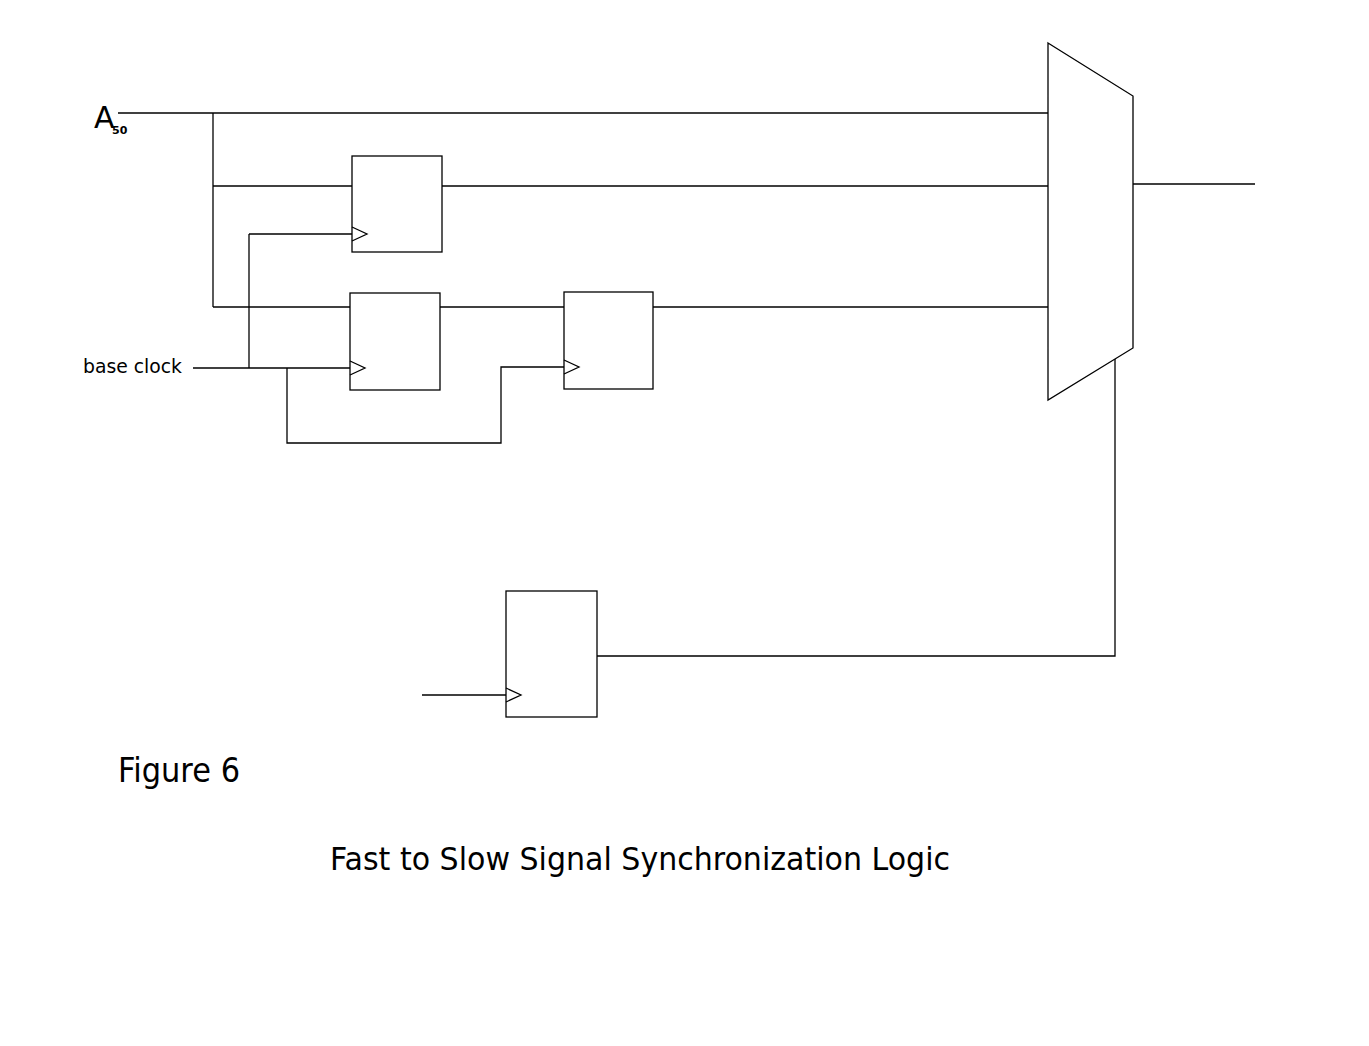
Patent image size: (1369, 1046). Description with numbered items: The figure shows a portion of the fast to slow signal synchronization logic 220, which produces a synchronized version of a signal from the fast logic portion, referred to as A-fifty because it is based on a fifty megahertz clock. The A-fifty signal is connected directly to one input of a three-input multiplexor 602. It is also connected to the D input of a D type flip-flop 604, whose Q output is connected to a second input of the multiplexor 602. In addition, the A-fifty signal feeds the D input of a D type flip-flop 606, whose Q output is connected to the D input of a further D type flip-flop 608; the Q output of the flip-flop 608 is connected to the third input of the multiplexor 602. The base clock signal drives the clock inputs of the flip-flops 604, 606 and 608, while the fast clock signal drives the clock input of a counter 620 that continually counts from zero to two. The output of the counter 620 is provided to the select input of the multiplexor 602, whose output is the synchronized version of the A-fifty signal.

The multiplexor 602 is at (1133, 120).
The D type flip-flop 604 is at (417, 156).
The D type flip-flop 606 is at (422, 293).
The D type flip-flop 608 is at (615, 292).
The counter 620 is at (558, 591).
The fast to slow signal synchronization logic 220 is at (1068, 751).